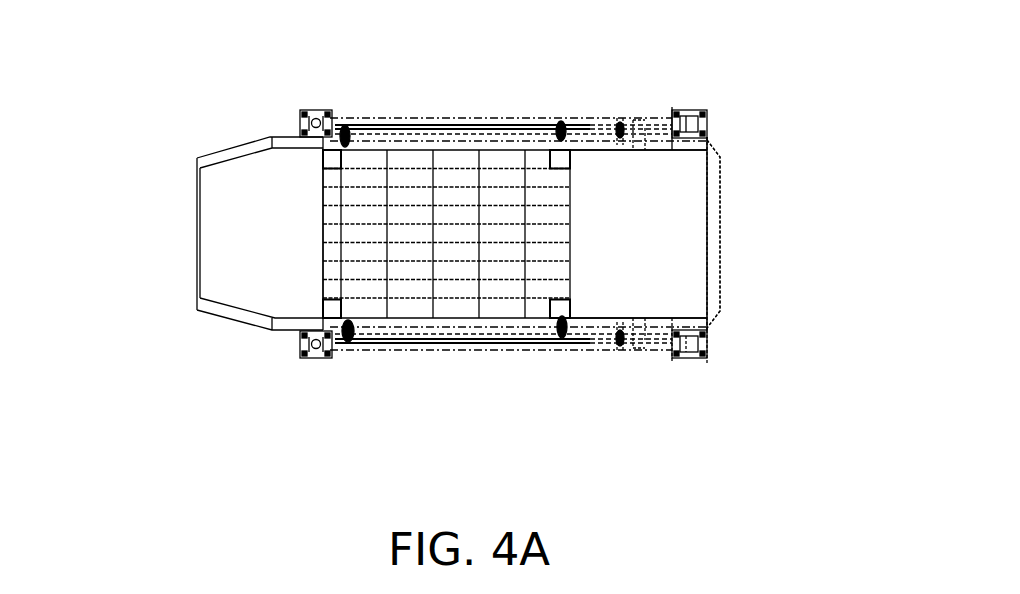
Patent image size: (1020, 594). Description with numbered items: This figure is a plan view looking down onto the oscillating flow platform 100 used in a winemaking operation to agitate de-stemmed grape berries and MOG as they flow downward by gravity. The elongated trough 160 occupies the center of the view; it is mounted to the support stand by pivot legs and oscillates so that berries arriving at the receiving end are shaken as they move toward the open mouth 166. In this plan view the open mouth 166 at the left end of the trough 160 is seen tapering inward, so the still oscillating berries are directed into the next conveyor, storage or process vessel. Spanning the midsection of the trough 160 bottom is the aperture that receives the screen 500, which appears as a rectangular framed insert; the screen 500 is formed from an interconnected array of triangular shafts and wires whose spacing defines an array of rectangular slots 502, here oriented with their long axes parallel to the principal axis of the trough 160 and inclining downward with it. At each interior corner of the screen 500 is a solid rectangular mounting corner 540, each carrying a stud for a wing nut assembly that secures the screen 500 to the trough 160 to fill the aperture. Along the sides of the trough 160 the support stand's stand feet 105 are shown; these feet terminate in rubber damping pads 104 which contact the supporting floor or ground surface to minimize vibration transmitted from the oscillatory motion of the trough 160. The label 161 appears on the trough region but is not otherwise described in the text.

The oscillating flow platform 100 is at (773, 234).
The rubber damping pad 104 is at (711, 137).
The stand foot 105 is at (692, 107).
The trough 160 is at (689, 270).
The rear platform 161 is at (660, 255).
The open mouth 166 is at (243, 218).
The screen 500 is at (466, 230).
The rectangular slot 502 is at (378, 226).
The mounting corner 540 is at (332, 163).